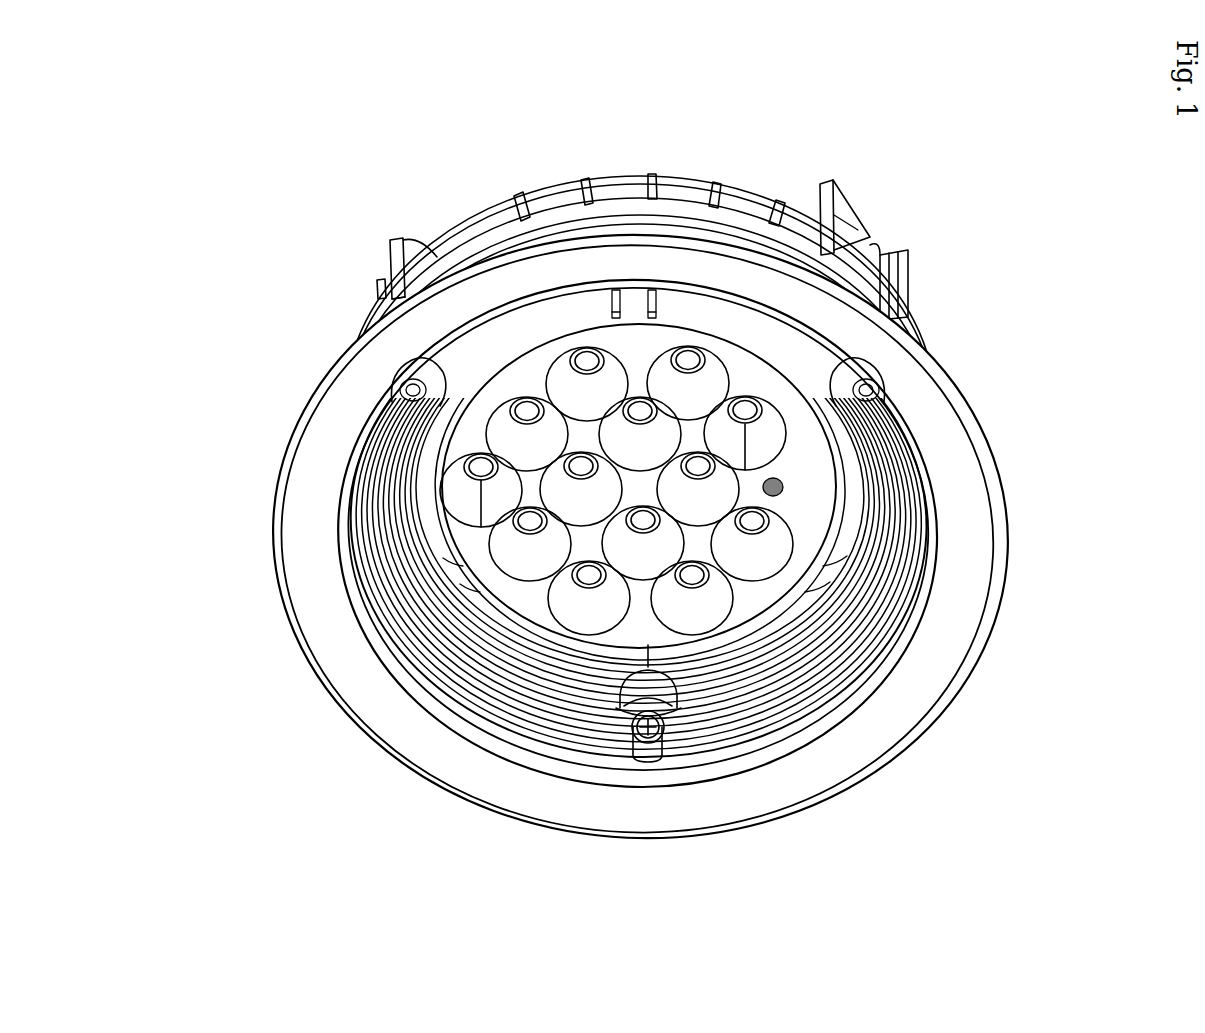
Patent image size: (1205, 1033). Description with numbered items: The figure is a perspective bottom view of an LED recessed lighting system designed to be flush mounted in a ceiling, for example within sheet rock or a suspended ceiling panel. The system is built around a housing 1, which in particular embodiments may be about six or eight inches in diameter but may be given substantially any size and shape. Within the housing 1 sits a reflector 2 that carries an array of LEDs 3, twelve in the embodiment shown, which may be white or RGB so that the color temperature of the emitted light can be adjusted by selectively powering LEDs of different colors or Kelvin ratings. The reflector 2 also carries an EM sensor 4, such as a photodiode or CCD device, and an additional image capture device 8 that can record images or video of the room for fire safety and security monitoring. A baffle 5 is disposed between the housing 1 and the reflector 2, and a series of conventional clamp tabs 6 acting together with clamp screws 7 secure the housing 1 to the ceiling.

The housing 1 is at (354, 318).
The reflector 2 is at (523, 603).
The LEDs 3 is at (725, 457).
The EM sensor 4 is at (470, 462).
The baffle 5 is at (830, 693).
The clamp tabs 6 is at (850, 192).
The clamp screws 7 is at (670, 748).
The image capture device 8 is at (785, 487).